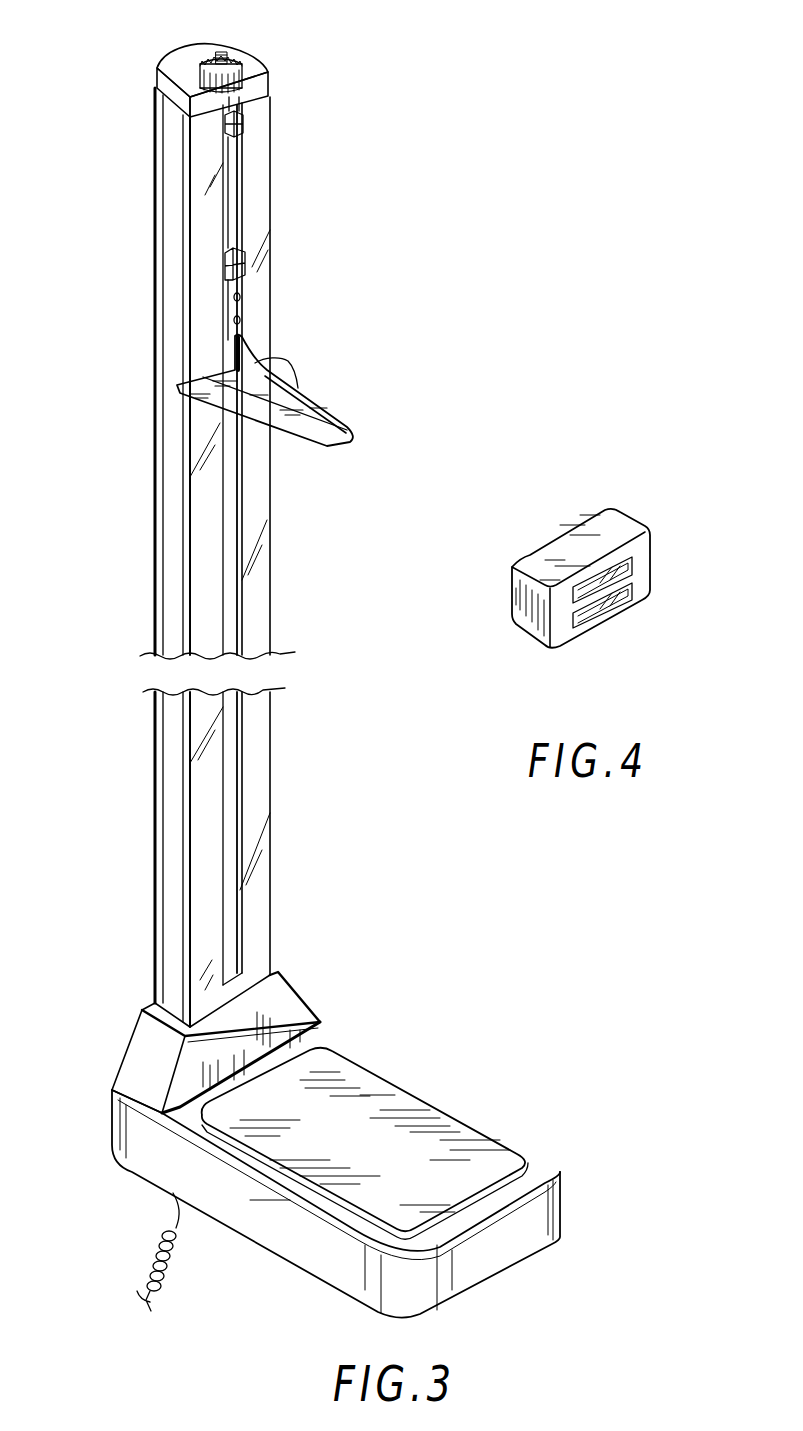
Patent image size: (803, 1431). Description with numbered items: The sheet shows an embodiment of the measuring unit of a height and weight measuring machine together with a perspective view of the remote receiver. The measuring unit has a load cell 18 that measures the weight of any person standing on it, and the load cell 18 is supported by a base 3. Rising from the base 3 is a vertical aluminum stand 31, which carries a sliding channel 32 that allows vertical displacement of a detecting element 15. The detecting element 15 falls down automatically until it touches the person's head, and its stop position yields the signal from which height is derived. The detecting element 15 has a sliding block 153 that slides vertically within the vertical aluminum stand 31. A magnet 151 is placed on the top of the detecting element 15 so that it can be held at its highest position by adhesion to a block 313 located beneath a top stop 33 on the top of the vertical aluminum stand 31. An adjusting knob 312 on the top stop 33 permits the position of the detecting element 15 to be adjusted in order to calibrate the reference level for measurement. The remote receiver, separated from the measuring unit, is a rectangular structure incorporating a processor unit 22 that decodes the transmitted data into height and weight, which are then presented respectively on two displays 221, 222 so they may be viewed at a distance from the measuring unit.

In FIG. 3, the base 3 is at (290, 1010).
In FIG. 3, the detecting element 15 is at (317, 430).
In FIG. 3, the load cell 18 is at (479, 1150).
In FIG. 4, the processor unit 22 is at (640, 553).
In FIG. 3, the vertical aluminum stand 31 is at (208, 525).
In FIG. 3, the sliding channel 32 is at (227, 615).
In FIG. 3, the top stop 33 is at (175, 67).
In FIG. 3, the magnet 151 is at (240, 268).
In FIG. 3, the sliding block 153 is at (225, 248).
In FIG. 4, the display 221 is at (607, 607).
In FIG. 4, the display 222 is at (573, 597).
In FIG. 3, the adjusting knob 312 is at (237, 62).
In FIG. 3, the block 313 is at (243, 127).